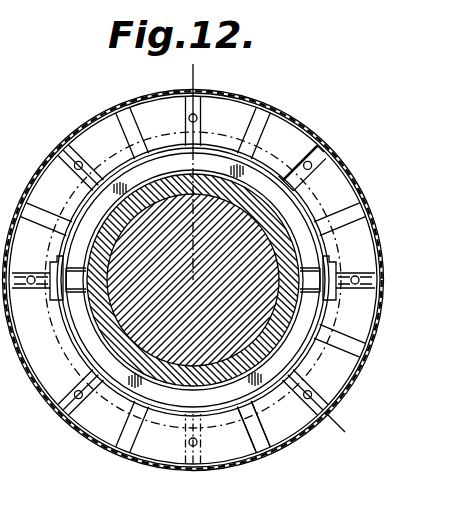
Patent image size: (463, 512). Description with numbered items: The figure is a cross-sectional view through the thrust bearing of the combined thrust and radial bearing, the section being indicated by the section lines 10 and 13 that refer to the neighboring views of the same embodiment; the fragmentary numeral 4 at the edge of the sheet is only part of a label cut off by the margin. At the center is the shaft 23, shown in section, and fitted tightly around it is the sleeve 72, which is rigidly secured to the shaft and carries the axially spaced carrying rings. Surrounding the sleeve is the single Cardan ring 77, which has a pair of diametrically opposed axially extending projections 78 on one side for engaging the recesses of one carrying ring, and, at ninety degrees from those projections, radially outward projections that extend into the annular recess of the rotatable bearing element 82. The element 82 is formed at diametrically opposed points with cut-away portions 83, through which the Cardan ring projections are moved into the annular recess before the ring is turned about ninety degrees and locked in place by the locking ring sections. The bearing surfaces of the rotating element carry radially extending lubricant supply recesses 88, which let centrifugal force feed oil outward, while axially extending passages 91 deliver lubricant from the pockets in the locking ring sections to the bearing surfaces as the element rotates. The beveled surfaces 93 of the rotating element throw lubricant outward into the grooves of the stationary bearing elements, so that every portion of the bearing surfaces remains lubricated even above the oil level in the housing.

The shaft 23 is at (252, 332).
The sleeve 72 is at (106, 228).
The rotatable bearing element 82 is at (116, 110).
The lubricant supply recesses 88 is at (67, 161).
The axially extending passages 91 is at (82, 161).
The Cardan ring 77 is at (256, 184).
The beveled surfaces 93 is at (320, 216).
The cut-away portions 83 is at (50, 260).
The axially extending projections 78 is at (46, 292).
The section line 10- 10 is at (178, 74).
The section line 13- 13 is at (36, 331).
The housing 4 is at (4, 215).